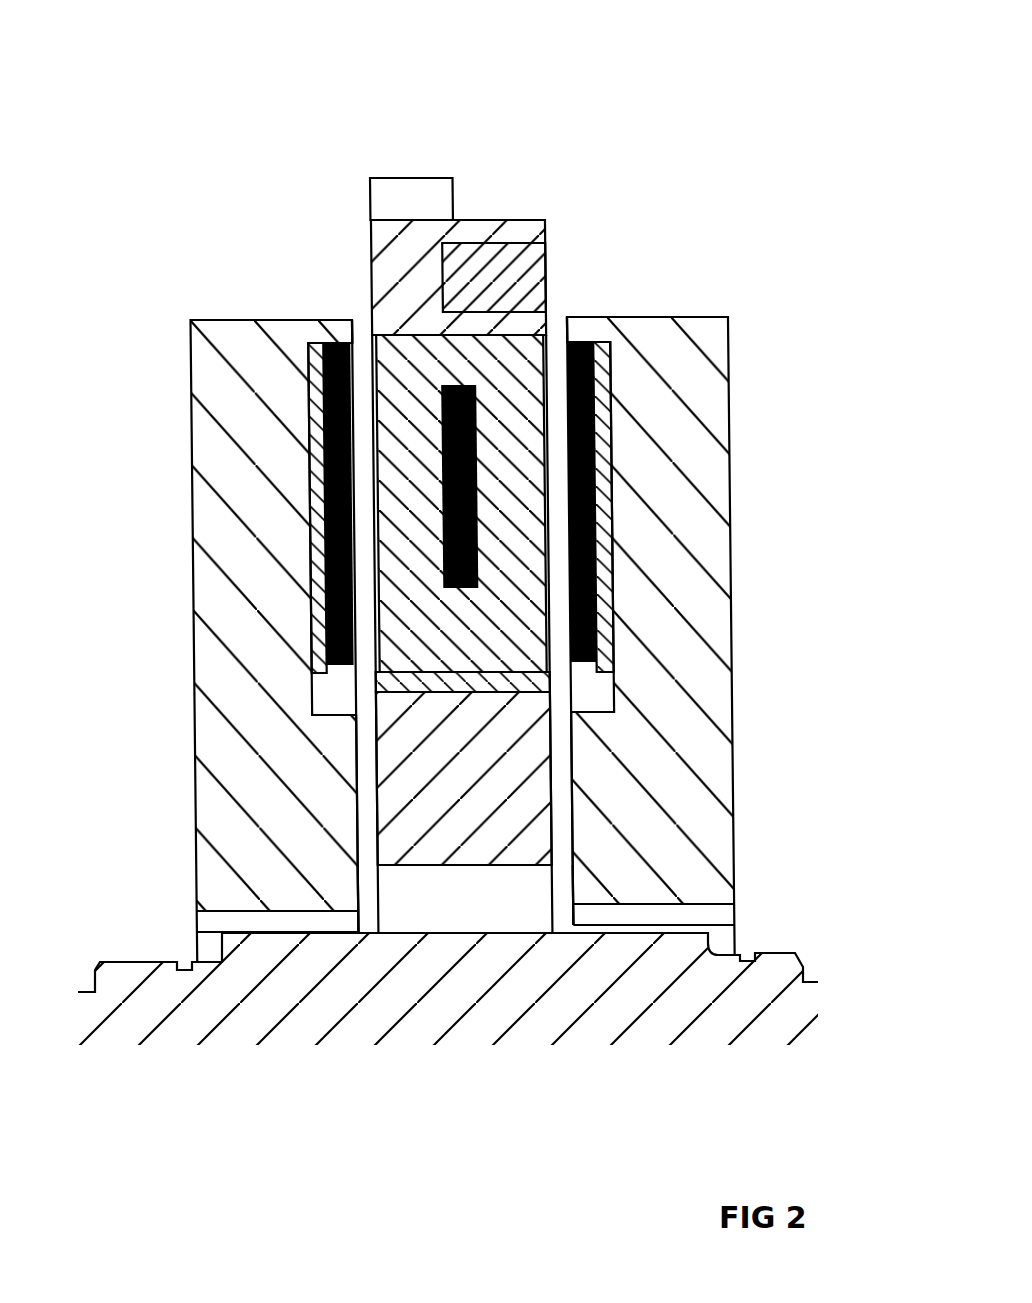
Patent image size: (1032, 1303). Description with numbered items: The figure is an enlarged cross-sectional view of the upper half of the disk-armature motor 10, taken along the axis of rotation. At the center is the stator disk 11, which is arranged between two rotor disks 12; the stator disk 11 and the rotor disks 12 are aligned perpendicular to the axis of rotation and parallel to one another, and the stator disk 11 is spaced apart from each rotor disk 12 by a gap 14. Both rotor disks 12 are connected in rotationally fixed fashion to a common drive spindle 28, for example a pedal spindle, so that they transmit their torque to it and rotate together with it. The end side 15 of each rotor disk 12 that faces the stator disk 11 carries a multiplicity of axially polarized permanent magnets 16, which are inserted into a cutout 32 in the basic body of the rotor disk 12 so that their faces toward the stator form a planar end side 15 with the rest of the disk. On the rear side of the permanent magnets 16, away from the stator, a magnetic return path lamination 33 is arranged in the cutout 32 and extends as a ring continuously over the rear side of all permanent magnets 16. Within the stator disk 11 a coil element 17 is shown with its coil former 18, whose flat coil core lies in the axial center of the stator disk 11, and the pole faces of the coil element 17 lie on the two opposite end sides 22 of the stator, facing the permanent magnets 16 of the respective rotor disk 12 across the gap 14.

The disk-armature motor 10 is at (667, 98).
The stator disk 11 is at (472, 160).
The rotor disk 12 is at (270, 275).
The gap 14 is at (360, 313).
The end side 15 is at (364, 872).
The permanent magnet 16 is at (330, 343).
The coil element 17 is at (448, 352).
The coil former 18 is at (478, 422).
The end side of the stator 22 is at (376, 760).
The drive spindle 28 is at (778, 948).
The cutout 32 is at (325, 696).
The magnetic return path lamination 33 is at (315, 583).